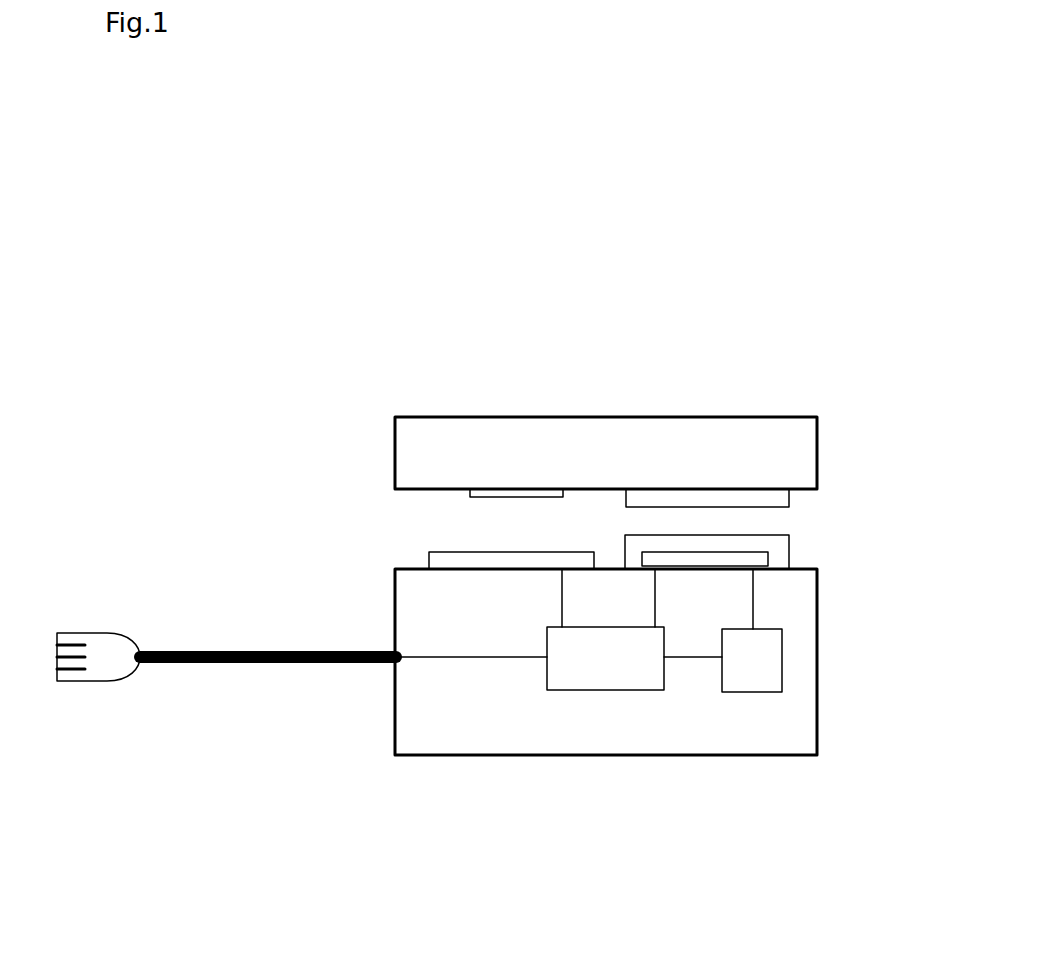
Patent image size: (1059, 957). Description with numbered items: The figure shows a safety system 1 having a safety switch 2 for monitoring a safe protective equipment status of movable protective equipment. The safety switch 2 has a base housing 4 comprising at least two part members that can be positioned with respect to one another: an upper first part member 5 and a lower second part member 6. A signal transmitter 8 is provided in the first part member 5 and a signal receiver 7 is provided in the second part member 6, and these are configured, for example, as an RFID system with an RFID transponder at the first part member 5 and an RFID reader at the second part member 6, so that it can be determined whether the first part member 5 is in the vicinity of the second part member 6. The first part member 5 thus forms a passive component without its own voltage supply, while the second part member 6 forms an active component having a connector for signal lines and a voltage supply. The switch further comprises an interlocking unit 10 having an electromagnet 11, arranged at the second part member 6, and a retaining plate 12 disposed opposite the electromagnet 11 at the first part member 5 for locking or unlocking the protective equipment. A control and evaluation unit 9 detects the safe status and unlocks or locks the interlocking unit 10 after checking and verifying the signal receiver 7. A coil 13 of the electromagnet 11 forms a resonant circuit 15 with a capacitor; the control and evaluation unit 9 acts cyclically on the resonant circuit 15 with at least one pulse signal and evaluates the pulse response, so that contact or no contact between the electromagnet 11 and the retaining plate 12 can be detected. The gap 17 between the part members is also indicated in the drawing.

The safety system 1 is at (208, 248).
The safety switch 2 is at (208, 307).
The base housing 4 is at (372, 413).
The first part member 5 is at (443, 417).
The second part member 6 is at (455, 755).
The signal receiver 7 is at (442, 558).
The signal transmitter 8 is at (477, 493).
The control and evaluation unit 9 is at (594, 680).
The interlocking unit 10 is at (625, 523).
The electromagnet 11 is at (783, 544).
The retaining plate 12 is at (783, 502).
The coil 13 is at (757, 558).
The resonant circuit 15 is at (757, 680).
The measuring gap 17 is at (422, 535).